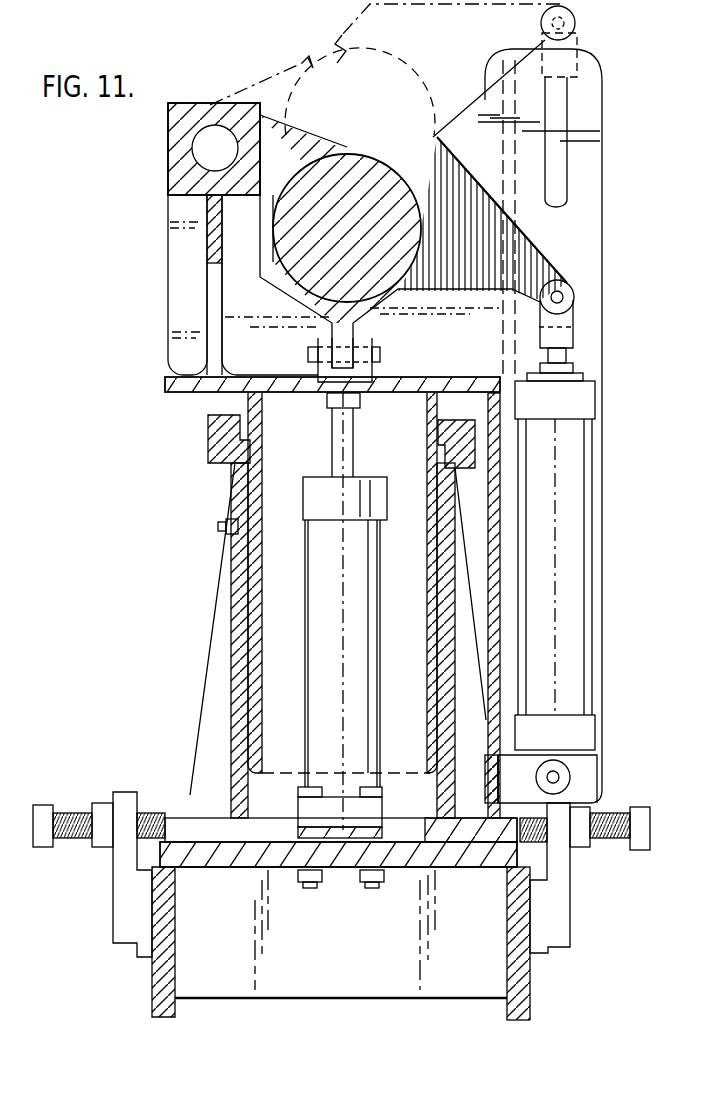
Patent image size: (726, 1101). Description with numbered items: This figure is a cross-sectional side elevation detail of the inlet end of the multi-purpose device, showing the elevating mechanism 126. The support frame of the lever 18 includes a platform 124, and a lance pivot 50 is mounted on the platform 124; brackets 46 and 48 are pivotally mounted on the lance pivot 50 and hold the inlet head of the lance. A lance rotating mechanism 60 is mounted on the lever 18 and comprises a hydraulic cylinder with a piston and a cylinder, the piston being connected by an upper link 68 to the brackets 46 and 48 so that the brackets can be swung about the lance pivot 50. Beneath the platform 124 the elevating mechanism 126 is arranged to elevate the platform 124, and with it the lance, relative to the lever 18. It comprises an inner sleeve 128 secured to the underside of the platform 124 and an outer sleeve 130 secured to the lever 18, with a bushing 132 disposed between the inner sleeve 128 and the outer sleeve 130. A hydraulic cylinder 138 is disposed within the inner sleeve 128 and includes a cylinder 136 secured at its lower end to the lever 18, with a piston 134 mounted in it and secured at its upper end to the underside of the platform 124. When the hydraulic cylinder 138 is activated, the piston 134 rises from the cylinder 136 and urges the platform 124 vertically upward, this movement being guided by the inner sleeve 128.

The lever 18 is at (530, 1005).
The bracket 46 is at (532, 250).
The bracket 48 is at (227, 222).
The lance pivot 50 is at (210, 105).
The lance rotating mechanism 60 is at (602, 580).
The upper link 68 is at (573, 342).
The platform 124 is at (174, 394).
The elevating mechanism 126 is at (230, 688).
The inner sleeve 128 is at (265, 543).
The outer sleeve 130 is at (230, 602).
The bushing 132 is at (248, 507).
The piston 134 is at (355, 445).
The cylinder 136 is at (380, 597).
The hydraulic cylinder 138 is at (353, 656).